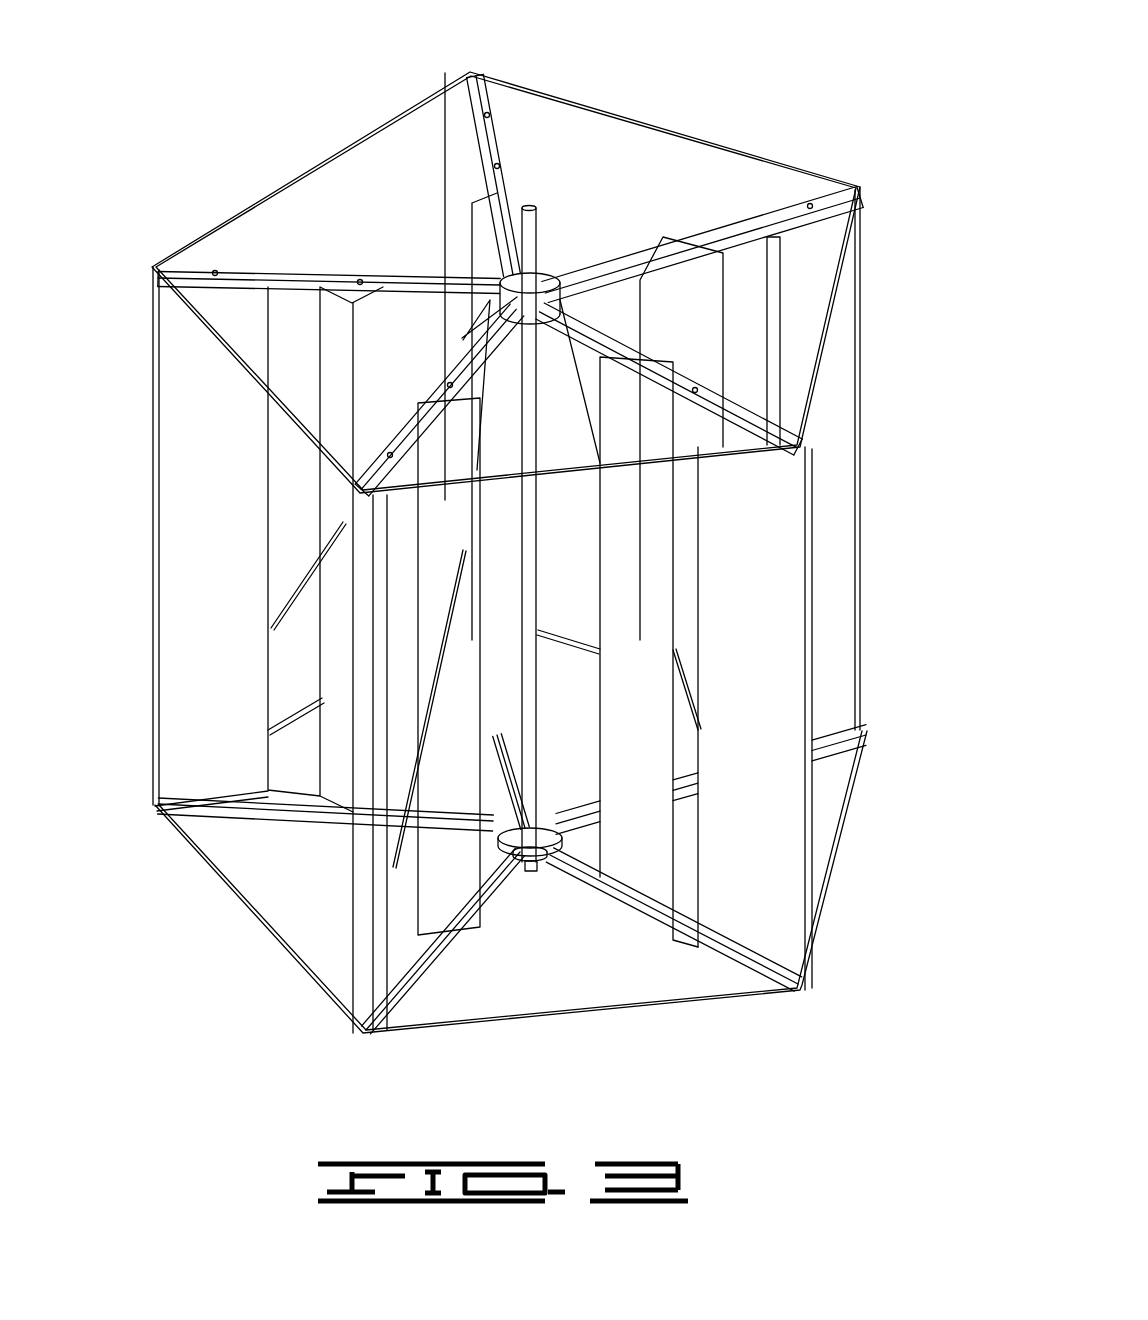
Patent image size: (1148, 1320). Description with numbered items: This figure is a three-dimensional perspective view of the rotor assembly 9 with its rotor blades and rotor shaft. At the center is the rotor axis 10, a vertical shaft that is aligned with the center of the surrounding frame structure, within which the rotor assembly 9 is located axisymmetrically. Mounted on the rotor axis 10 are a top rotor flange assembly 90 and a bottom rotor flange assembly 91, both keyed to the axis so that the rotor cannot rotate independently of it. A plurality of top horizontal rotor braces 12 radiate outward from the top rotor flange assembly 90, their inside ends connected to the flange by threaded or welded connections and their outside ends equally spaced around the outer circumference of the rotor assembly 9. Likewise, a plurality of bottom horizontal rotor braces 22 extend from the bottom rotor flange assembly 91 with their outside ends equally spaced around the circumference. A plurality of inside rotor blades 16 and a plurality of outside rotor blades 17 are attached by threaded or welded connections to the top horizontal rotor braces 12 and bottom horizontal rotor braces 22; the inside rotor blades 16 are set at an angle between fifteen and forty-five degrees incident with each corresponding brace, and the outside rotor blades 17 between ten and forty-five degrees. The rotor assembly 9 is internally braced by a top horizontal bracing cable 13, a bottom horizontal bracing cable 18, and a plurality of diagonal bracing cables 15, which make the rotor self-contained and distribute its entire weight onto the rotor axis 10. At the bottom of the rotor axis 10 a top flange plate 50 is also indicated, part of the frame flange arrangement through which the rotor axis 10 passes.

The rotor assembly 9 is at (503, 539).
The rotor axis 10 is at (535, 208).
The top horizontal rotor braces 12 is at (455, 85).
The top horizontal bracing cable 13 is at (540, 82).
The diagonal bracing cables 15 is at (320, 600).
The inside rotor blades 16 is at (700, 270).
The outside rotor blades 17 is at (455, 162).
The bottom horizontal bracing cable 18 is at (572, 630).
The bottom horizontal rotor braces 22 is at (525, 770).
The top flange plate 50 is at (542, 874).
The top rotor flange assembly 90 is at (558, 246).
The bottom rotor flange assembly 91 is at (537, 893).